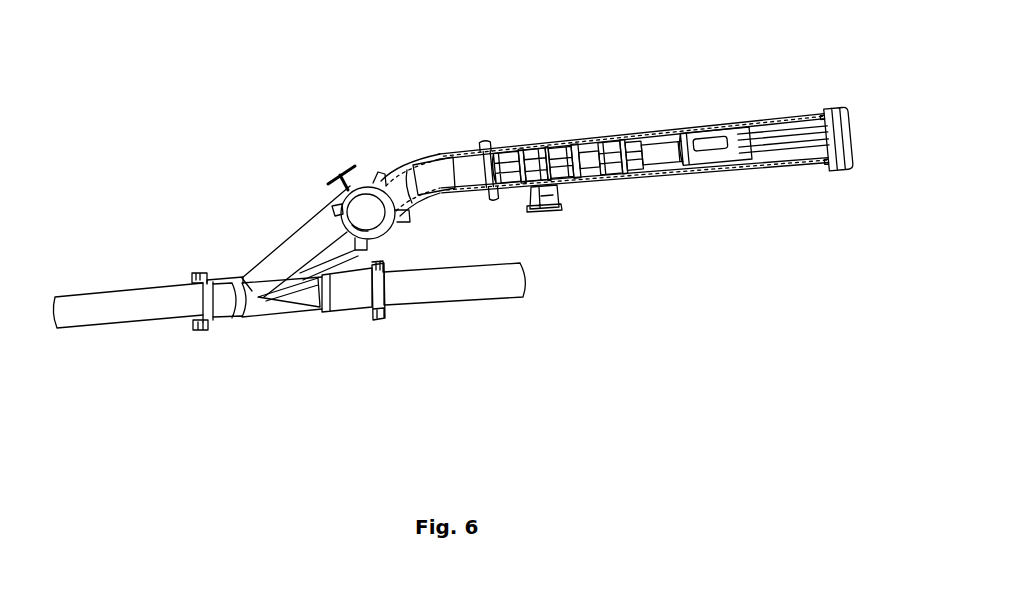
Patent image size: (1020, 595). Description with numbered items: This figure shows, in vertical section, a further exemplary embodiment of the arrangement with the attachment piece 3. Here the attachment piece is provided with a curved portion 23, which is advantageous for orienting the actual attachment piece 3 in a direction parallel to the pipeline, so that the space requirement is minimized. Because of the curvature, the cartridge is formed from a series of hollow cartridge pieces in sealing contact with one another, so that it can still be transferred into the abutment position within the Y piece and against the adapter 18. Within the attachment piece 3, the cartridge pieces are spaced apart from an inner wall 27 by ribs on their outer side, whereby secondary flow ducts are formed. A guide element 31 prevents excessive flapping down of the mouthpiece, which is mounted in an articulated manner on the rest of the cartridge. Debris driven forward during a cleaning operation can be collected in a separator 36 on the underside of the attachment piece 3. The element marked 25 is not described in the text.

The attachment piece 3 is at (645, 121).
The adapter 18 is at (217, 308).
The curved portion 23 is at (400, 162).
The ring holder 25 is at (332, 131).
The inner wall 27 is at (777, 162).
The guide element 31 is at (323, 310).
The separator 36 is at (543, 197).